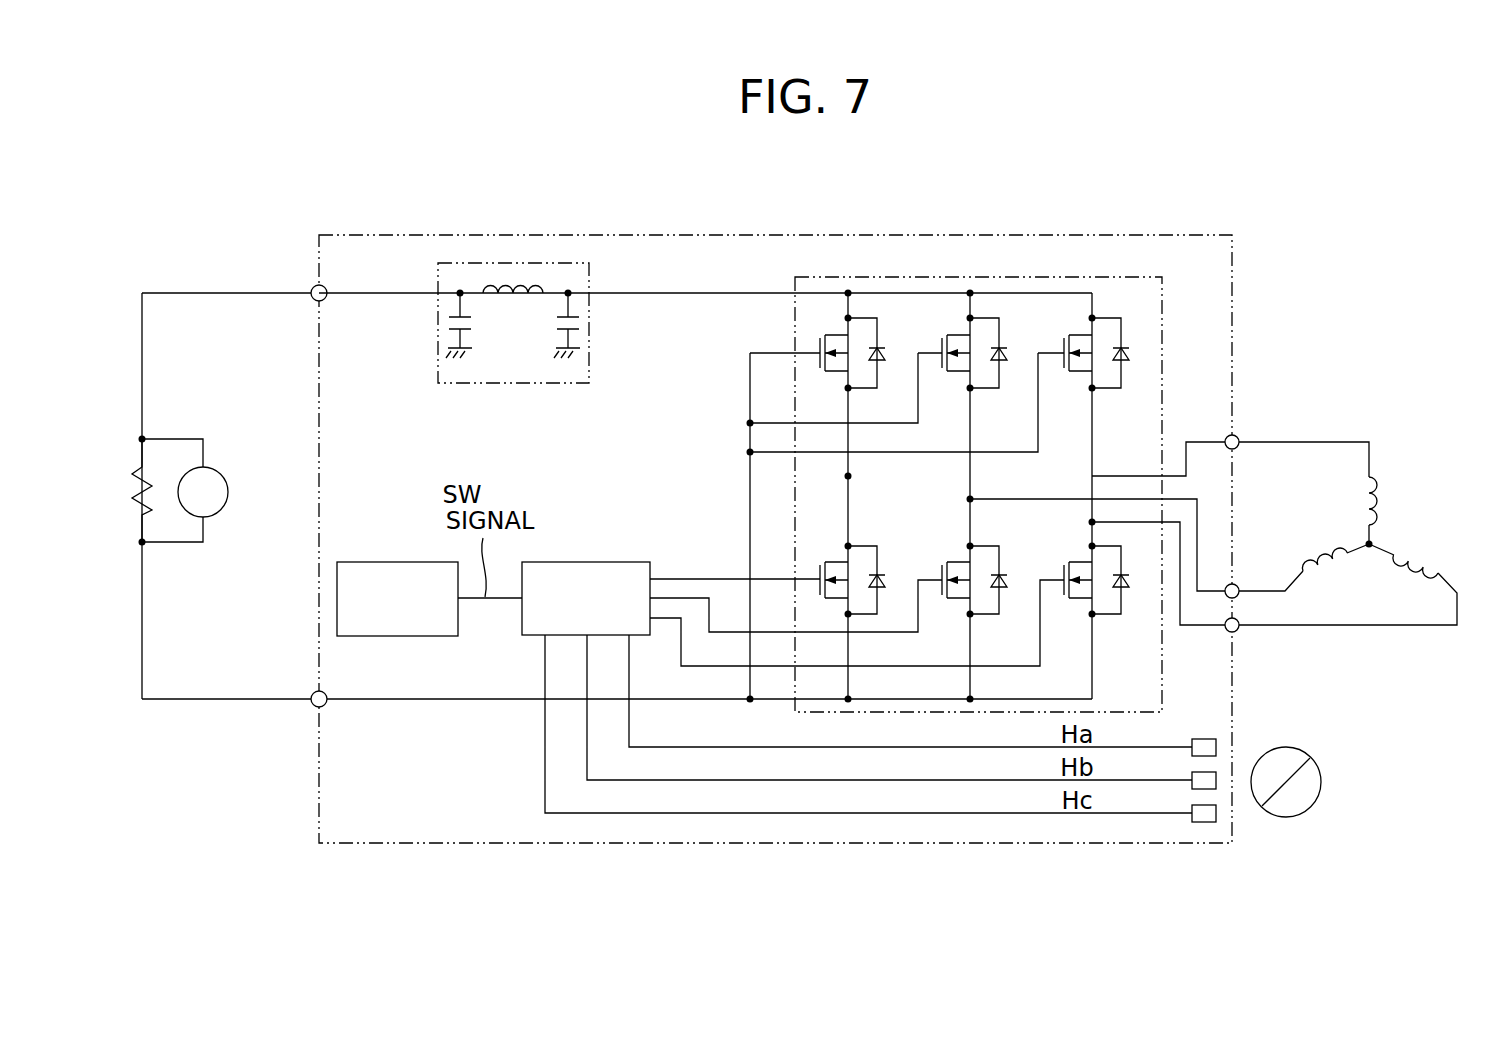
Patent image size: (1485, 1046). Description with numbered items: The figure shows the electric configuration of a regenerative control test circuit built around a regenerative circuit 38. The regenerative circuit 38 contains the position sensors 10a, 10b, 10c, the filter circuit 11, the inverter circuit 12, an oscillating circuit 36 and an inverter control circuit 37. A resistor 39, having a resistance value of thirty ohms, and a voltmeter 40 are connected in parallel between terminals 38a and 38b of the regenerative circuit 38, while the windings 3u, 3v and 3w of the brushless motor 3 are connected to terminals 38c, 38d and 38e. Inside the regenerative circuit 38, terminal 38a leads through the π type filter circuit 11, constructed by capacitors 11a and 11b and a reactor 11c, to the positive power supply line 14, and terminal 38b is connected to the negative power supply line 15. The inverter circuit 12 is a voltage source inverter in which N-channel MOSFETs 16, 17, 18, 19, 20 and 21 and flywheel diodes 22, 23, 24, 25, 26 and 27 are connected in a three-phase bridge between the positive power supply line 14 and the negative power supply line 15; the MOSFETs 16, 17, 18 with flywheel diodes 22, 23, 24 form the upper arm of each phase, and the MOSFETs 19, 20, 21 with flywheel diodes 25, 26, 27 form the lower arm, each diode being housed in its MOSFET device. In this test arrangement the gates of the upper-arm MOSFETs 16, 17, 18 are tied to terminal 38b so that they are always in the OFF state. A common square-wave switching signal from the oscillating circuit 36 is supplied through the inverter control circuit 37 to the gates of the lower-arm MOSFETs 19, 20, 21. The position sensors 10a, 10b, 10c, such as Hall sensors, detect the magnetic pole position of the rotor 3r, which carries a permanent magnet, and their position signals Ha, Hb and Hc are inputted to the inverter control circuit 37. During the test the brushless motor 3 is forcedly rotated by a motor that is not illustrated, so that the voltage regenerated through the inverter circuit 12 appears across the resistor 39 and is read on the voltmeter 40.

The brushless motor 3 is at (1382, 458).
The rotor 3r is at (1294, 748).
The winding 3u is at (1390, 498).
The winding 3v is at (1333, 579).
The winding 3w is at (1418, 558).
The position sensor 10a is at (1205, 738).
The position sensor 10b is at (1192, 789).
The position sensor 10c is at (1204, 823).
The filter circuit 11 is at (493, 282).
The capacitor 11a is at (476, 319).
The capacitor 11b is at (556, 334).
The reactor 11c is at (505, 290).
The inverter circuit 12 is at (988, 278).
The positive power supply line 14 is at (721, 292).
The negative power supply line 15 is at (425, 705).
The MOSFET 16 is at (822, 341).
The MOSFET 17 is at (941, 342).
The MOSFET 18 is at (1064, 342).
The MOSFET 19 is at (821, 557).
The MOSFET 20 is at (941, 557).
The MOSFET 21 is at (1063, 557).
The flywheel diode 22 is at (880, 345).
The flywheel diode 23 is at (1000, 345).
The flywheel diode 24 is at (1122, 346).
The flywheel diode 25 is at (880, 572).
The flywheel diode 26 is at (1000, 573).
The flywheel diode 27 is at (1122, 573).
The oscillating circuit 36 is at (398, 562).
The inverter control circuit 37 is at (600, 562).
The regenerative circuit 38 is at (808, 234).
The terminal 38a is at (311, 288).
The terminal 38b is at (311, 694).
The terminal 38c is at (1237, 435).
The terminal 38d is at (1237, 584).
The terminal 38e is at (1236, 632).
The resistor 39 is at (148, 492).
The voltmeter 40 is at (231, 481).